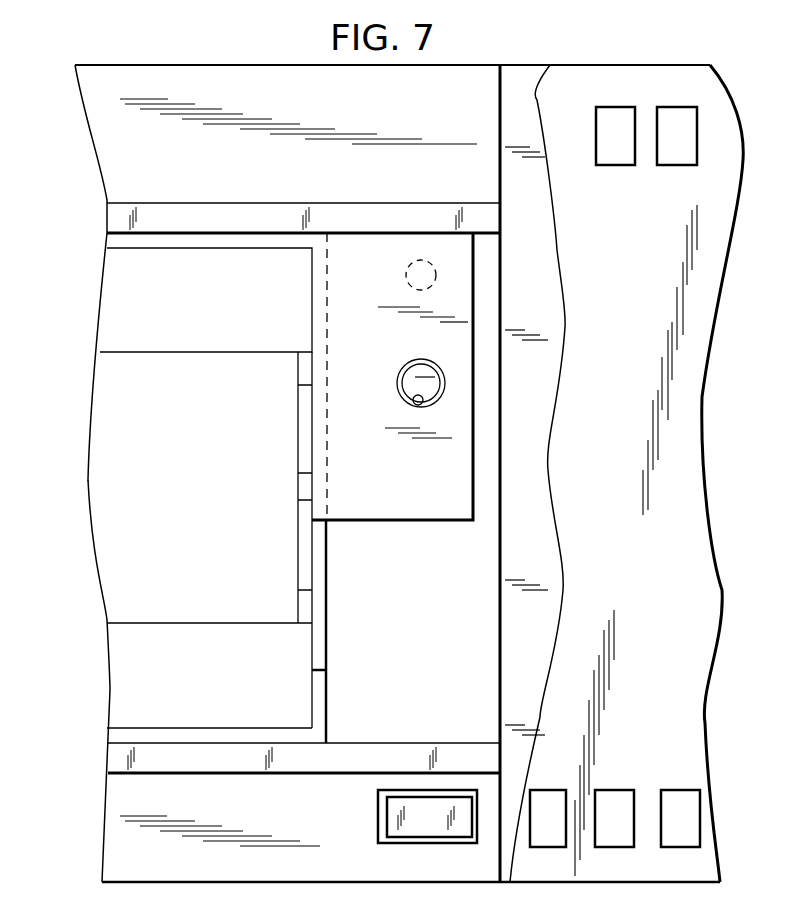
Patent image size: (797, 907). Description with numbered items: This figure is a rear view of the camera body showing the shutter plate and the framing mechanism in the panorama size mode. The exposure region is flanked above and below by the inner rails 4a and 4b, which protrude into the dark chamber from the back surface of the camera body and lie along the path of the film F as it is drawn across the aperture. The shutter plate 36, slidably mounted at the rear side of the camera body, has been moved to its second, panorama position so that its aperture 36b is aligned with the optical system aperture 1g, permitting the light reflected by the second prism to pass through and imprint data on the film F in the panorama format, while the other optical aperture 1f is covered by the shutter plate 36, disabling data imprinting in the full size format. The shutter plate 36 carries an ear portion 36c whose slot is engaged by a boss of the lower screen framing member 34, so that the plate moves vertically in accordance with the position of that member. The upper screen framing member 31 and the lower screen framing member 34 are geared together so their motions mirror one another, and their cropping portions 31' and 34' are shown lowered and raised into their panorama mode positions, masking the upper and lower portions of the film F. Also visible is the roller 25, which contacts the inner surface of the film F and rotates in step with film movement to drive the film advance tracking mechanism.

The inner rail 4a is at (150, 222).
The inner rail 4b is at (238, 764).
The aperture 1f is at (417, 258).
The aperture 1g is at (407, 378).
The shutter plate 36 is at (473, 302).
The aperture 36b is at (420, 405).
The ear portion 36c is at (318, 655).
The upper screen framing member 31 is at (274, 540).
The cropping portion 31' is at (175, 316).
The lower screen framing member 34 is at (195, 516).
The cropping portion 34' is at (171, 654).
The roller 25 is at (393, 817).
The film F is at (622, 438).